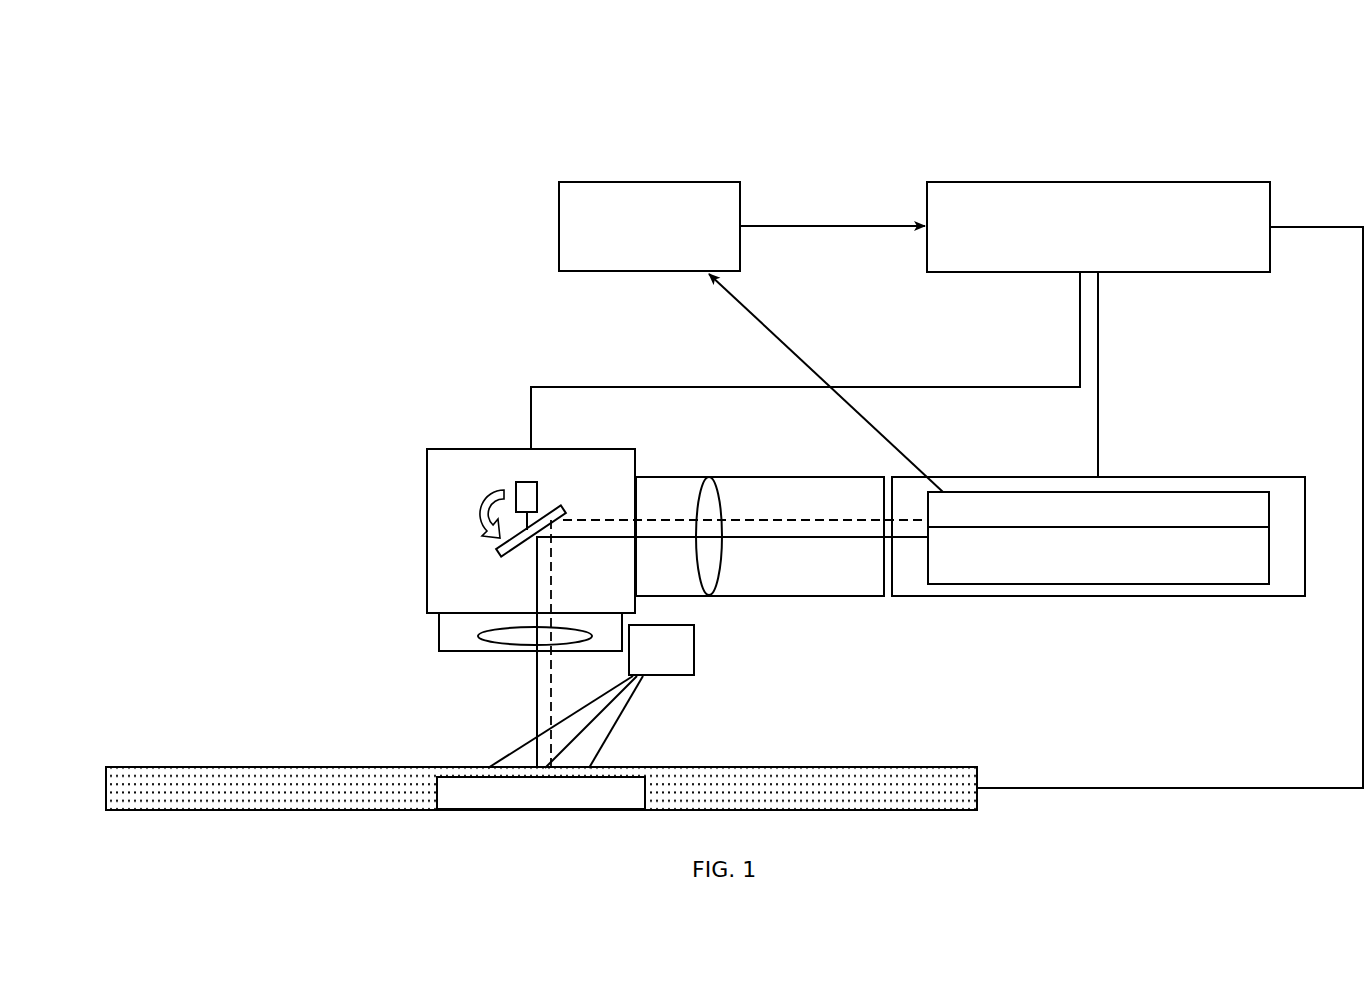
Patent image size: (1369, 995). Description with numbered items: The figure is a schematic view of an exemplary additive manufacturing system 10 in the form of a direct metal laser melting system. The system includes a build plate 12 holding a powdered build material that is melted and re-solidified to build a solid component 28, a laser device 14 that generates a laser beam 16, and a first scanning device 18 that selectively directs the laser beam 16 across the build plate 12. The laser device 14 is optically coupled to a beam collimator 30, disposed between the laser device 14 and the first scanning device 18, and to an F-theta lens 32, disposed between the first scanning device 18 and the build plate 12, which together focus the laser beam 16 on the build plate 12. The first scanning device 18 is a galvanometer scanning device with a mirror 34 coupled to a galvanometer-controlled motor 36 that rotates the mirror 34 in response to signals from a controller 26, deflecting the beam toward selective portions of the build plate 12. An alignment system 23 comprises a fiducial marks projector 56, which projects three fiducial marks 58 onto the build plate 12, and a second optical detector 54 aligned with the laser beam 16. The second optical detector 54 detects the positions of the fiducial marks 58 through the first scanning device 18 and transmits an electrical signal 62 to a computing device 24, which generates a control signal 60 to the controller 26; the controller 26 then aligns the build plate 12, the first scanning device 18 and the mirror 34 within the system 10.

The additive manufacturing system 10 is at (1185, 73).
The build plate 12 is at (850, 767).
The laser device 14 is at (1098, 539).
The laser beam 16 is at (760, 523).
The first scanning device 18 is at (532, 537).
The alignment system 23 is at (940, 638).
The computing device 24 is at (650, 182).
The controller 26 is at (1098, 182).
The solid component 28 is at (447, 777).
The beam collimator 30 is at (722, 567).
The F-theta lens 32 is at (512, 645).
The mirror 34 is at (563, 509).
The galvanometer-controlled motor 36 is at (527, 482).
The second optical detector 54 is at (1180, 492).
The fiducial marks projector 56 is at (694, 658).
The fiducial marks 58 is at (612, 728).
The control signal 60 is at (835, 226).
The electrical signal 62 is at (880, 433).